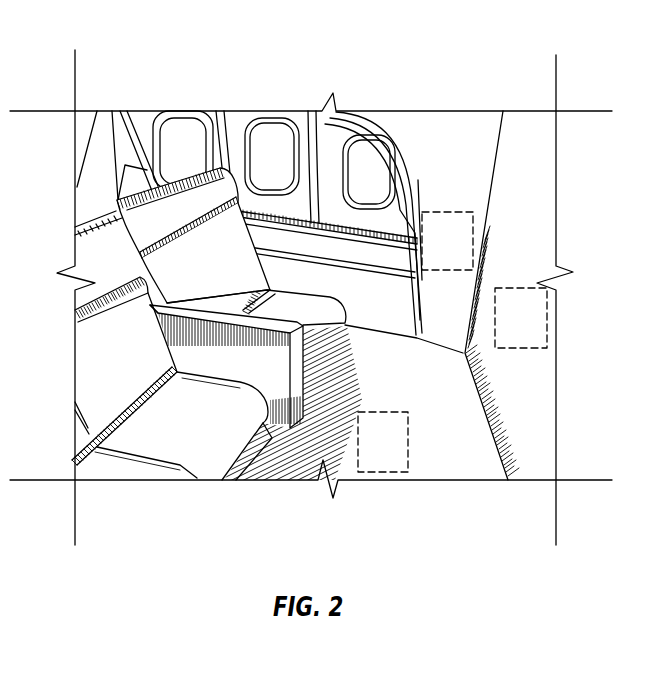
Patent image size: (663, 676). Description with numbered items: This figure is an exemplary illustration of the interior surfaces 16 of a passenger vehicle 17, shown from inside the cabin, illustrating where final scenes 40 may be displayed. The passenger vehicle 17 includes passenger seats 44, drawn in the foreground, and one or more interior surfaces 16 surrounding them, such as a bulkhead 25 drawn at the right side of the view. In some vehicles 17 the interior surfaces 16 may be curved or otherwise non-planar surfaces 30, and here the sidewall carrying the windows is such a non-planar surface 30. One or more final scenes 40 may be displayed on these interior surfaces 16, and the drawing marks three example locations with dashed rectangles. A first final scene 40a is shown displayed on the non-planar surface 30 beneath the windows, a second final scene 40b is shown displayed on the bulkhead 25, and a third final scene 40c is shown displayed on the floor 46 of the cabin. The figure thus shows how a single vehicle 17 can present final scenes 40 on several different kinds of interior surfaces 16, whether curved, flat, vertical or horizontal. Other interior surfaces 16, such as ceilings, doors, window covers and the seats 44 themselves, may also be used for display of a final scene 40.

The interior surfaces 16 is at (433, 287).
The vehicle 17 is at (418, 106).
The bulkhead 25 is at (547, 167).
The non-planar surface 30 is at (453, 164).
The final scene 40 is at (485, 336).
The final scene 40a is at (464, 252).
The final scene 40b is at (540, 327).
The final scene 40c is at (401, 456).
The passenger seats 44 is at (222, 284).
The floor 46 is at (394, 377).